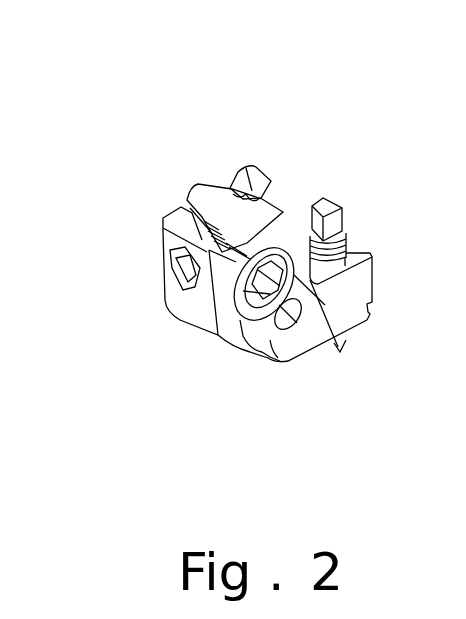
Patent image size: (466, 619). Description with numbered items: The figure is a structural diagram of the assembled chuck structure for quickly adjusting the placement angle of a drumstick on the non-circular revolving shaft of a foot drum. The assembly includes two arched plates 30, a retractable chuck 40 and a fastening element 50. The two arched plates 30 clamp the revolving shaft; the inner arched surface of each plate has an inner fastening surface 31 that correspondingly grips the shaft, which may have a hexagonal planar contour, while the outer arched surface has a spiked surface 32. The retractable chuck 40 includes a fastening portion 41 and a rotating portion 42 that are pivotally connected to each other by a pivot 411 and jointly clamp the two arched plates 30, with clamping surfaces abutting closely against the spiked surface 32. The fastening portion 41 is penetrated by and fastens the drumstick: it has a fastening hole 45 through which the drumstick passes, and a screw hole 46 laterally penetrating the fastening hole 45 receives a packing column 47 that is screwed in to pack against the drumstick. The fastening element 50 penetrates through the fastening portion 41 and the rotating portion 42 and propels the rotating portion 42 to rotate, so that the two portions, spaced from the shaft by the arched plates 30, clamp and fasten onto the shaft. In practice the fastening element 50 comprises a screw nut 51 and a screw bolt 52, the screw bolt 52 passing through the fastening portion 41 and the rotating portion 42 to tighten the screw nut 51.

The arched plate 30 is at (270, 248).
The inner fastening surface 31 is at (258, 258).
The spiked surface 32 is at (242, 248).
The retractable chuck 40 is at (304, 366).
The fastening portion 41 is at (345, 278).
The pivot 411 is at (276, 358).
The rotating portion 42 is at (173, 283).
The fastening hole 45 is at (258, 352).
The screw hole 46 is at (323, 285).
The packing column 47 is at (327, 204).
The fastening element 50 is at (155, 139).
The screw nut 51 is at (162, 252).
The screw bolt 52 is at (224, 148).